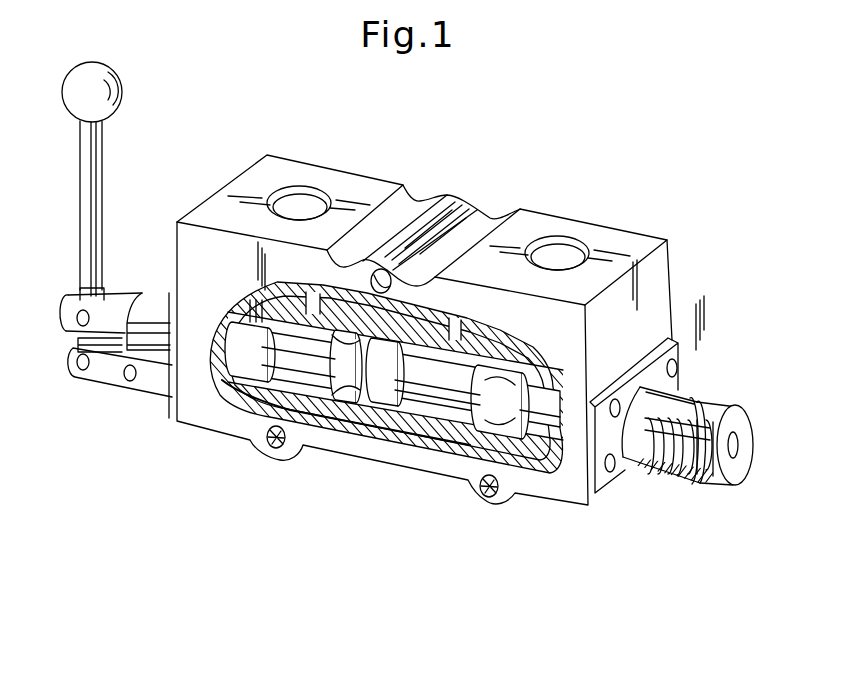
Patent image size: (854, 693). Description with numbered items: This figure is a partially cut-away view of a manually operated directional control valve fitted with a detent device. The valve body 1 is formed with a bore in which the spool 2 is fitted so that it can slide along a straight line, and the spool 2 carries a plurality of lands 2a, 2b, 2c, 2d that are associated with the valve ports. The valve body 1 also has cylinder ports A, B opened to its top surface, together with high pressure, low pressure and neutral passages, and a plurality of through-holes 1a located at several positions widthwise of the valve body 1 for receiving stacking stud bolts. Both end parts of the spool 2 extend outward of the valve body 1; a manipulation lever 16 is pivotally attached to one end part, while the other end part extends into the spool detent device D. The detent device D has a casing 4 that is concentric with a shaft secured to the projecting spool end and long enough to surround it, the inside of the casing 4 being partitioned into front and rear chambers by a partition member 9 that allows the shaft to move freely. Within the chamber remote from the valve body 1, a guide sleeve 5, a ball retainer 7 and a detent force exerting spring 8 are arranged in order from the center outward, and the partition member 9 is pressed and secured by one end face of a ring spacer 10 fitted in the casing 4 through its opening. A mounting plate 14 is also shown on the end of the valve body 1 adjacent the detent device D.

The valve body 1 is at (435, 352).
The through-holes 1a is at (382, 270).
The spool 2 is at (349, 440).
The land 2a is at (492, 396).
The land 2b is at (388, 400).
The land 2c is at (334, 395).
The land 2d is at (213, 392).
The casing 4 is at (676, 468).
The guide sleeve 5 is at (736, 432).
The ball retainer 7 is at (713, 440).
The detent force exerting spring 8 is at (703, 468).
The partition member 9 is at (658, 473).
The ring spacer 10 is at (648, 474).
The mounting plate 14 is at (653, 373).
The manipulation lever 16 is at (98, 172).
The cylinder port A is at (300, 208).
The cylinder port B is at (567, 253).
The spool detent device D is at (697, 385).